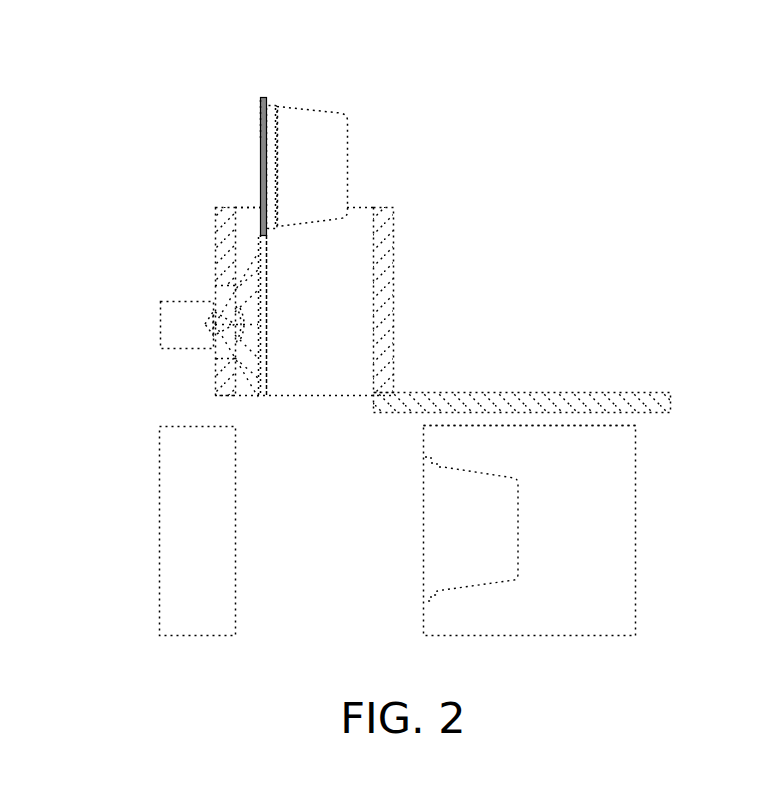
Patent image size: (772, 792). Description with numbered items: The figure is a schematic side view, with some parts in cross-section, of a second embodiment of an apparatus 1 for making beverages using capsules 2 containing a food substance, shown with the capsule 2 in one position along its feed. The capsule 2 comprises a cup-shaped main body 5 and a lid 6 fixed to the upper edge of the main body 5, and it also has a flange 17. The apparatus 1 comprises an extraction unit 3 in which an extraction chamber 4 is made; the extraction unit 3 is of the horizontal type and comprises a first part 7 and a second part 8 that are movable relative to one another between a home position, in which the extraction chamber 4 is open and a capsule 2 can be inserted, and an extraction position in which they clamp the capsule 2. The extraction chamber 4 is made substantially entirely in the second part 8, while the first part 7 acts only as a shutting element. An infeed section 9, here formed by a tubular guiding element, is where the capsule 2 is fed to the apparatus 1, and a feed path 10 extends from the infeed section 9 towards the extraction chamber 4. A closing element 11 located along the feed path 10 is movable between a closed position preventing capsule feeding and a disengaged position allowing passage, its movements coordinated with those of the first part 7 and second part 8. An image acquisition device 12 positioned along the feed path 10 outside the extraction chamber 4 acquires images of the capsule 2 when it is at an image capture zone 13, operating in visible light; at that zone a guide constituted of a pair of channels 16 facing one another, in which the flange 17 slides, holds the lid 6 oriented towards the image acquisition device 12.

The apparatus for making beverages 1 is at (592, 292).
The capsule 2 is at (330, 170).
The extraction unit 3 is at (688, 458).
The extraction chamber 4 is at (458, 548).
The cup-shaped main body 5 is at (310, 118).
The lid 6 is at (262, 122).
The first part 7 is at (195, 588).
The second part 8 is at (587, 542).
The infeed section 9 is at (247, 184).
The feed path 10 is at (357, 334).
The closing element 11 is at (550, 403).
The image acquisition device 12 is at (185, 322).
The image capture zone 13 is at (356, 294).
The channels 16 is at (265, 353).
The flange 17 is at (262, 98).